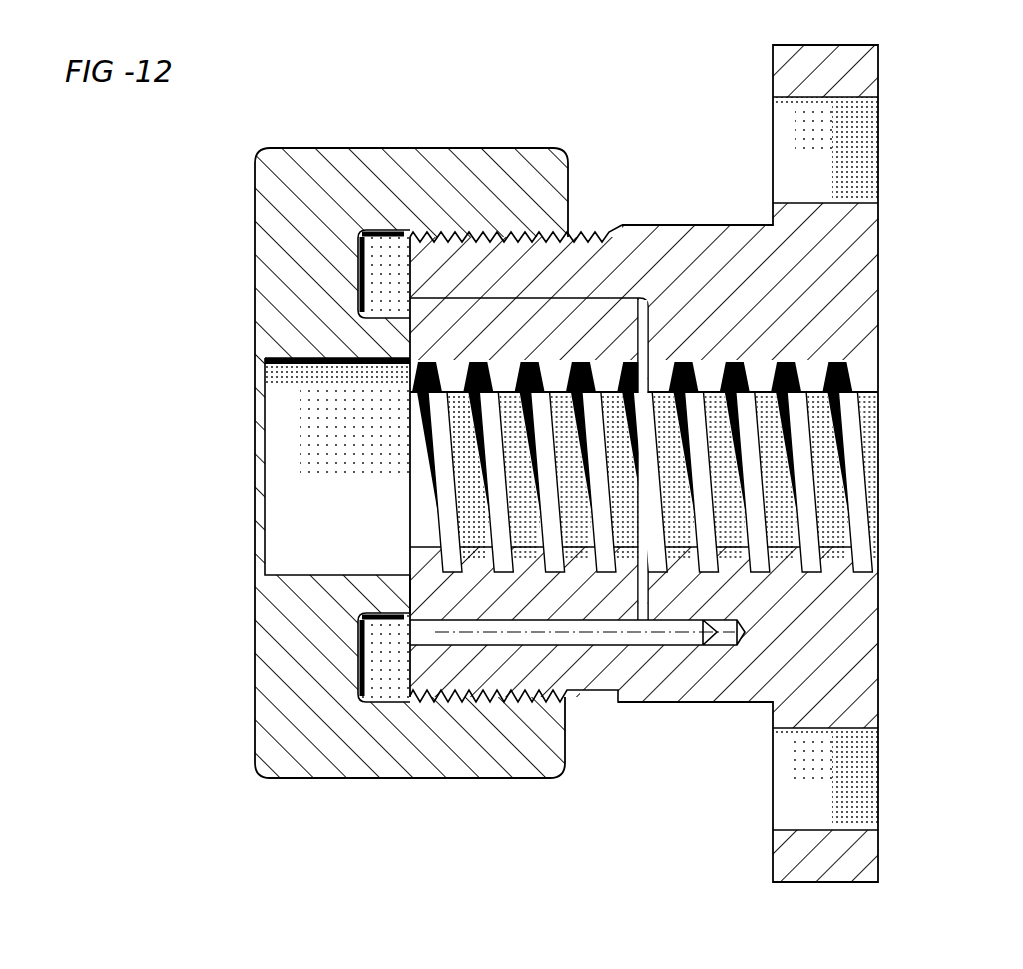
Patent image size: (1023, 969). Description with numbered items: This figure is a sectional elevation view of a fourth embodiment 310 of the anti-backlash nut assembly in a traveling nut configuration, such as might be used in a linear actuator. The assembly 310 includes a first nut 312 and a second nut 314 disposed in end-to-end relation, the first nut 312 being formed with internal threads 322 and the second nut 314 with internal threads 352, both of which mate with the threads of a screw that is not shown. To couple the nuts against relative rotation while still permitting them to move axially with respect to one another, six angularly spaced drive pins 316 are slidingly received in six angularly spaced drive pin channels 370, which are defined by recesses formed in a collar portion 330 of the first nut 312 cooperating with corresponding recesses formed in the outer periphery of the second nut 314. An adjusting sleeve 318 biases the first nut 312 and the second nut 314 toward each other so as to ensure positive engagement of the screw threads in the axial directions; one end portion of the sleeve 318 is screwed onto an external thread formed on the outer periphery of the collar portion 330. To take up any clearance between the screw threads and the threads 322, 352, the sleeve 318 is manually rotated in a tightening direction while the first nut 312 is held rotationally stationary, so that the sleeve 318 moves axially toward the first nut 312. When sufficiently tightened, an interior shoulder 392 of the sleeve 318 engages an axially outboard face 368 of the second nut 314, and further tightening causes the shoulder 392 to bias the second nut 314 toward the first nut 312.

The fourth embodiment of the anti-backlash nut assembly 310 is at (600, 108).
The first nut 312 is at (868, 300).
The second nut 314 is at (576, 326).
The drive pins 316 is at (660, 636).
The adjusting sleeve 318 is at (387, 168).
The internal threads 322 is at (850, 457).
The collar portion 330 is at (560, 666).
The internal threads 352 is at (437, 521).
The axially outboard face 368 is at (404, 593).
The drive pin channels 370 is at (525, 643).
The interior shoulder 392 is at (422, 336).